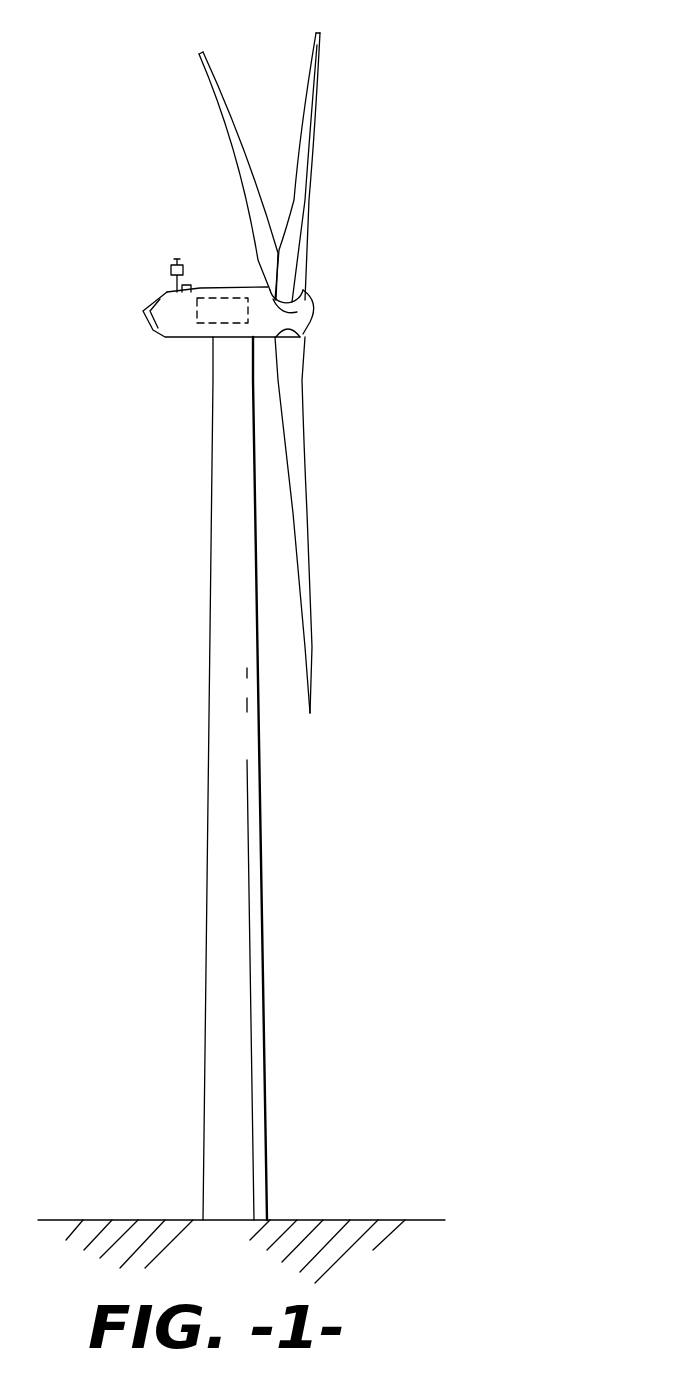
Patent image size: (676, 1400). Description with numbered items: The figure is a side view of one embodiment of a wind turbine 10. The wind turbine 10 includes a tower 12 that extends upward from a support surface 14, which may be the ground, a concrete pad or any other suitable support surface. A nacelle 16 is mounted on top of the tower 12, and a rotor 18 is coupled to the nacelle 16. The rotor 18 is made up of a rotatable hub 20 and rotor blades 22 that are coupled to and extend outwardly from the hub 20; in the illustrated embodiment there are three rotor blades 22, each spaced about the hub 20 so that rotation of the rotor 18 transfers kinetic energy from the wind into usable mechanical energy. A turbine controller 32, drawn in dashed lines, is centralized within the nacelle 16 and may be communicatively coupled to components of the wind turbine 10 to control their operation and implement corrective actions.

The wind turbine 10 is at (452, 110).
The tower 12 is at (218, 898).
The support surface 14 is at (126, 1220).
The nacelle 16 is at (177, 322).
The rotor 18 is at (310, 362).
The rotatable hub 20 is at (318, 309).
The rotor blade 22 is at (308, 77).
The turbine controller 32 is at (230, 323).